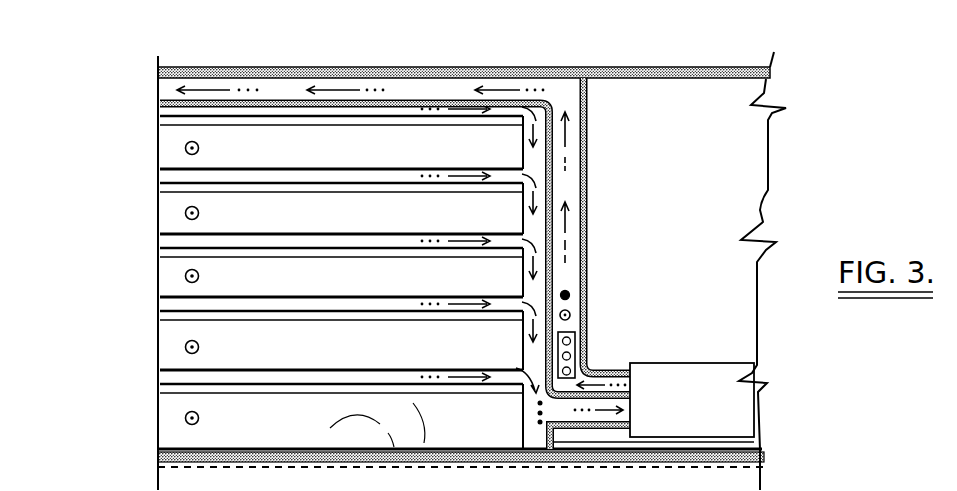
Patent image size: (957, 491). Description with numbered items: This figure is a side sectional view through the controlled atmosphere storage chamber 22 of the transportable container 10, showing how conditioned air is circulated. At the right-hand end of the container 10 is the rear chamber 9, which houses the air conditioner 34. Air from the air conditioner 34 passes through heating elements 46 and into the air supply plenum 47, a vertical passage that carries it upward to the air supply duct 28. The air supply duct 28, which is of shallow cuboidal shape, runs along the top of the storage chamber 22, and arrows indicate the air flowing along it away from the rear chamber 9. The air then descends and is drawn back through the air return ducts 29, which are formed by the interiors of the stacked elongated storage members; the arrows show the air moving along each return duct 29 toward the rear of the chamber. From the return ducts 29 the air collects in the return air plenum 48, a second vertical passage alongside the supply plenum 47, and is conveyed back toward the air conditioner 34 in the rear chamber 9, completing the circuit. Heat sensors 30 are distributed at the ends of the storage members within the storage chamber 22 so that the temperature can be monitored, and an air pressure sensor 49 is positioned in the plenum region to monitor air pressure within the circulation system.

The rear chamber 9 is at (737, 154).
The container 10 is at (400, 54).
The controlled atmosphere storage chamber 22 is at (97, 328).
The air supply duct 28 is at (558, 90).
The air return ducts 29 is at (355, 312).
The heat sensors 30 is at (185, 149).
The air conditioner 34 is at (707, 407).
The heating elements 46 is at (590, 349).
The air supply plenum 47 is at (568, 187).
The return air plenum 48 is at (535, 285).
The air pressure sensor 49 is at (568, 290).